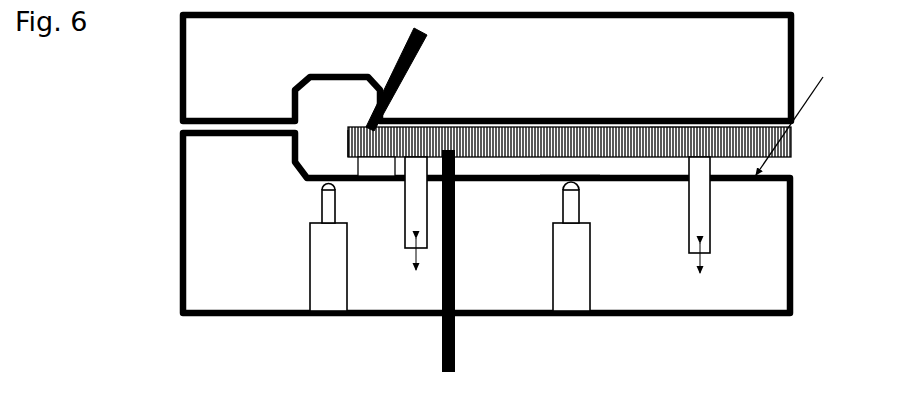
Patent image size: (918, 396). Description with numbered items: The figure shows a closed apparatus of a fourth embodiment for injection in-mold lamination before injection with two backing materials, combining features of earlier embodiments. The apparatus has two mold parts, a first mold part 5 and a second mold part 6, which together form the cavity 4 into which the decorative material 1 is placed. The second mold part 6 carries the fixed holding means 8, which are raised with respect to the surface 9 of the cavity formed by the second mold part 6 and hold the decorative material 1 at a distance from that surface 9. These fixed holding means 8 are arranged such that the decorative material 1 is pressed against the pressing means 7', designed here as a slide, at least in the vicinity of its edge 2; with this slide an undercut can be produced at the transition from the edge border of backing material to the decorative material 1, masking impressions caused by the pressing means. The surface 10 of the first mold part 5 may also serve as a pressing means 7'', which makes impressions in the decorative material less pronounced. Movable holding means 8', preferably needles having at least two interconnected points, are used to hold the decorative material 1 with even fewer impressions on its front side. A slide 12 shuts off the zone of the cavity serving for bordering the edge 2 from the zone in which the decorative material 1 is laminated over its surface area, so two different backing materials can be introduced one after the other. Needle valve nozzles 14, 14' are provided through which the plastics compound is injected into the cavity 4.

The decorative material 1 is at (527, 145).
The edge 2 is at (347, 145).
The cavity 4 is at (562, 165).
The first mold part 5 is at (252, 72).
The second mold part 6 is at (255, 221).
The pressing means 7' is at (430, 79).
The pressing means 7'' is at (725, 83).
The holding means 8 is at (376, 190).
The movable holding means 8' is at (584, 215).
The surface 9 is at (801, 110).
The surface 10 is at (677, 128).
The slide 12 is at (455, 340).
The needle valve nozzle 14 is at (571, 246).
The needle valve nozzle 14' is at (289, 248).